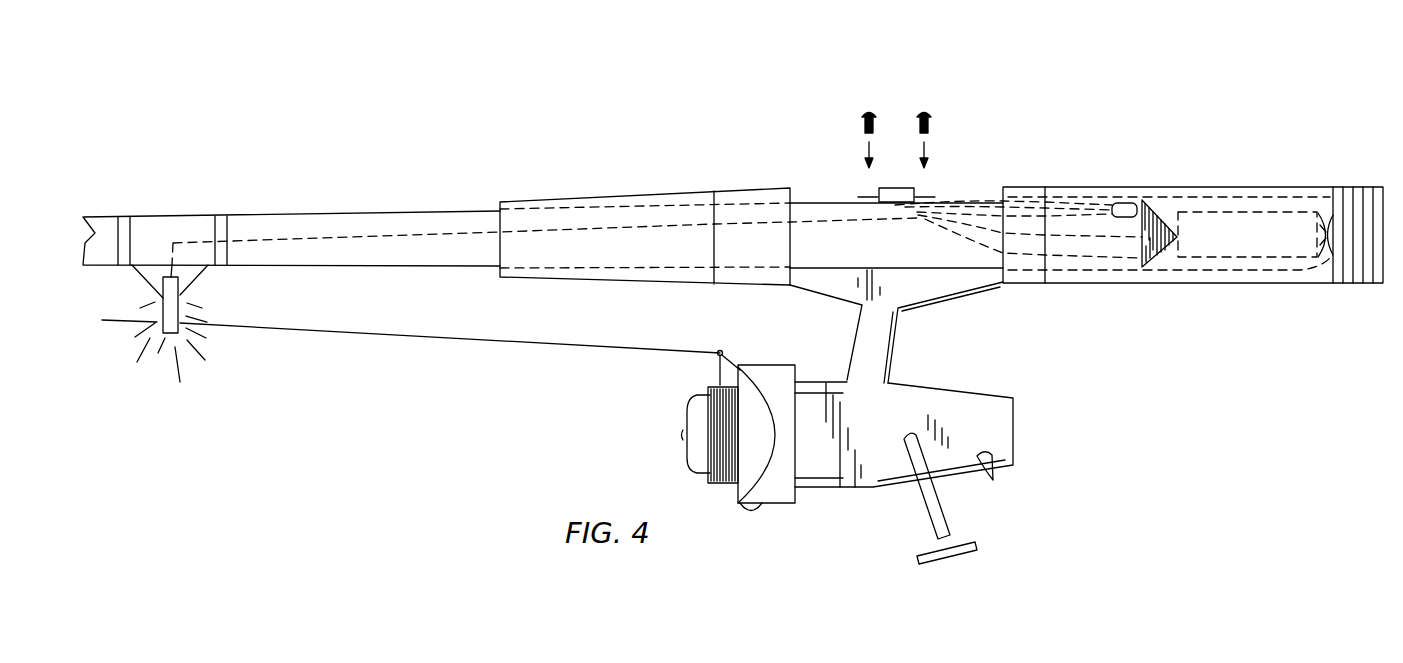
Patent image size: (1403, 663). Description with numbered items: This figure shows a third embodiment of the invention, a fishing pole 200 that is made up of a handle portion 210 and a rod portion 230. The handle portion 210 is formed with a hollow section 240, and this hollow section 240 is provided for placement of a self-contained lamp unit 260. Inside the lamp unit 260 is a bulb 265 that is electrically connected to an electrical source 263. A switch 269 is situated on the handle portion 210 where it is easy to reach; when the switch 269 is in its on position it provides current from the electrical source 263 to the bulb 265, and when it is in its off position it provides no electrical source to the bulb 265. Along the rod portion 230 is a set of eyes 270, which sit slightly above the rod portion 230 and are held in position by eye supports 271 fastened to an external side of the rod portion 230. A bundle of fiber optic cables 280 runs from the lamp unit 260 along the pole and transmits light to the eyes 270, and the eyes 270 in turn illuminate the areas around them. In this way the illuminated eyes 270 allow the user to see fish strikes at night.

The fishing pole 200 is at (1182, 53).
The handle portion 210 is at (987, 270).
The rod portion 230 is at (452, 267).
The hollow section 240 is at (948, 257).
The lamp unit 260 is at (1183, 268).
The electrical source 263 is at (1267, 217).
The bulb 265 is at (1125, 203).
The switch 269 is at (907, 188).
The eyes 270 is at (150, 340).
The eye supports 271 is at (180, 296).
The fiber optic cables 280 is at (363, 237).